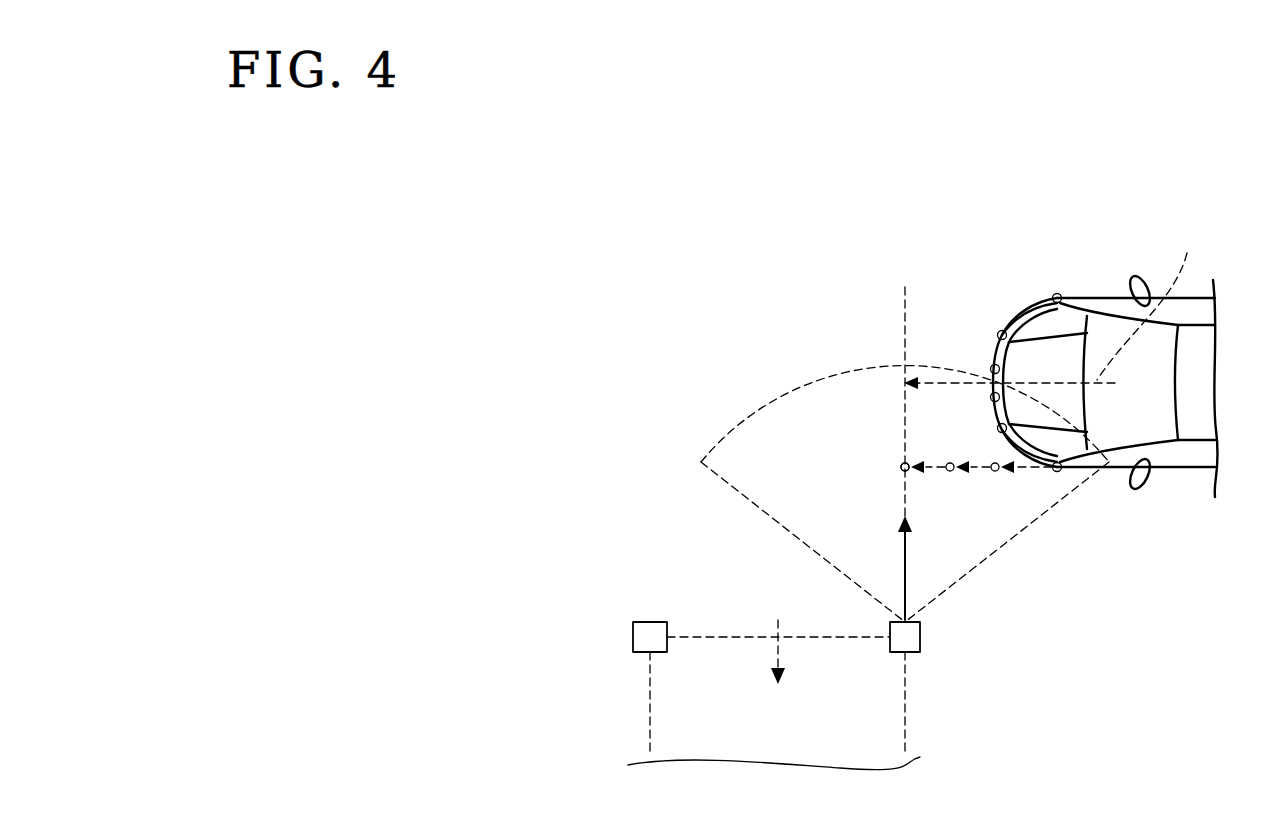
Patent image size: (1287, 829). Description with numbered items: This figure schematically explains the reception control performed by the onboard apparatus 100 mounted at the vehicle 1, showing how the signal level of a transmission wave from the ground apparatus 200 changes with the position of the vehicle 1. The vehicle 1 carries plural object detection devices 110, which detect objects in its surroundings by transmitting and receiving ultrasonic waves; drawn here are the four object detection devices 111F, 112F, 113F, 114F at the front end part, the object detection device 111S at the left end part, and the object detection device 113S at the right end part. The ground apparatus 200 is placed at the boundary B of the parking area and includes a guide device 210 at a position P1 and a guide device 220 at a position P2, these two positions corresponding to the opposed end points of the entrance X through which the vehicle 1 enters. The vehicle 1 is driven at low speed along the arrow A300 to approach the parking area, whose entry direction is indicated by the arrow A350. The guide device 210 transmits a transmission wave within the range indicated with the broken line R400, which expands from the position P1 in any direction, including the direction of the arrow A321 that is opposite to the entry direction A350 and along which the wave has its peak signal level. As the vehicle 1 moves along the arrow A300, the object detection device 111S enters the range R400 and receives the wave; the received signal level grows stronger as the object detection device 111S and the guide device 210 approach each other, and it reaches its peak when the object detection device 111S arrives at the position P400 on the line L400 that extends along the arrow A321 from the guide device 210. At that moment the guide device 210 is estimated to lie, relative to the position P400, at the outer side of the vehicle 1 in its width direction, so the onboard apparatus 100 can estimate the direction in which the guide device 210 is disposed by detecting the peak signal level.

The vehicle 1 is at (1137, 313).
The onboard apparatus 100 is at (1180, 178).
The object detection devices 110 is at (904, 386).
The object detection device 111F is at (997, 428).
The object detection device 112F is at (990, 396).
The object detection device 113F is at (991, 367).
The object detection device 114F is at (1002, 330).
The object detection device 111S is at (1150, 556).
The object detection device 113S is at (1057, 293).
The arrow A300 is at (1157, 302).
The line L400 is at (903, 318).
The broken line R400 is at (730, 432).
The position P400 is at (889, 474).
The arrow A321 is at (900, 575).
The entrance X is at (724, 628).
The entry direction A350 is at (790, 652).
The ground apparatus 200 is at (771, 684).
The guide device 210 is at (992, 688).
The position P1 is at (920, 640).
The guide device 220 is at (557, 684).
The position P2 is at (633, 637).
The boundary B is at (912, 741).